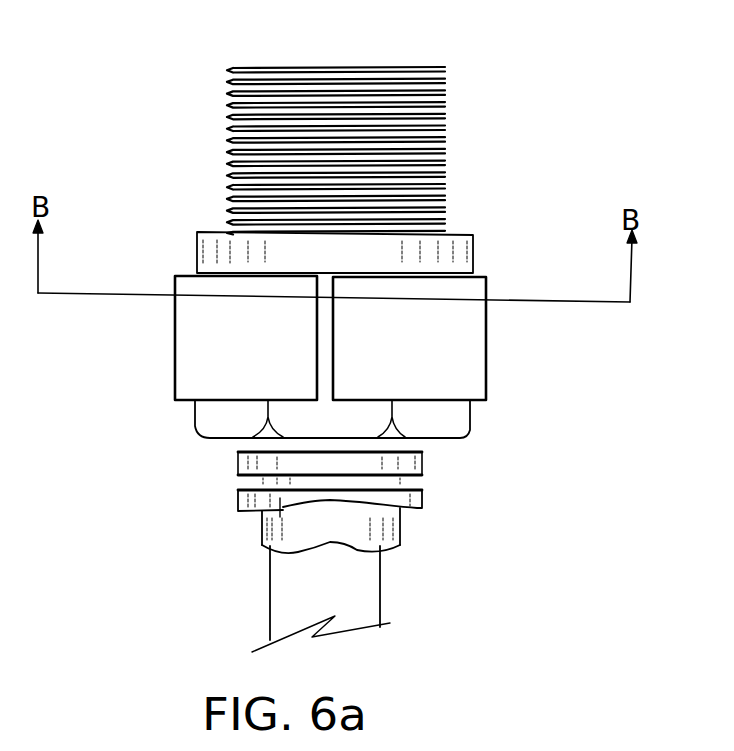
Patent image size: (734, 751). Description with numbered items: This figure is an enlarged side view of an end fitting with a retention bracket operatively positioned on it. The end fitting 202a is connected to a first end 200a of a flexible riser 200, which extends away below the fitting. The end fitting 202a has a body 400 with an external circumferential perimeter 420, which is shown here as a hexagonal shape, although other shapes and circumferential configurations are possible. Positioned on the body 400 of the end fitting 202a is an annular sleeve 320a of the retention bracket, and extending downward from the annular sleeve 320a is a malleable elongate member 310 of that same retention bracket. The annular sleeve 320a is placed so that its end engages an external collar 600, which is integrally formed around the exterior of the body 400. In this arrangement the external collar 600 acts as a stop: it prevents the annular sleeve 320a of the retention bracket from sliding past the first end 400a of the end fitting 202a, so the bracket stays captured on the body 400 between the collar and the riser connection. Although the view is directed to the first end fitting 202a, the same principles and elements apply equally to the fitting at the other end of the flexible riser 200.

The first end fitting 202a is at (484, 88).
The body 400 is at (223, 192).
The first end 400a is at (221, 80).
The external collar 600 is at (483, 270).
The annular sleeve 320a is at (488, 318).
The external circumferential perimeter 420 is at (448, 417).
The first end 200a is at (422, 452).
The flexible riser 200 is at (430, 507).
The malleable elongate member 310 is at (267, 608).